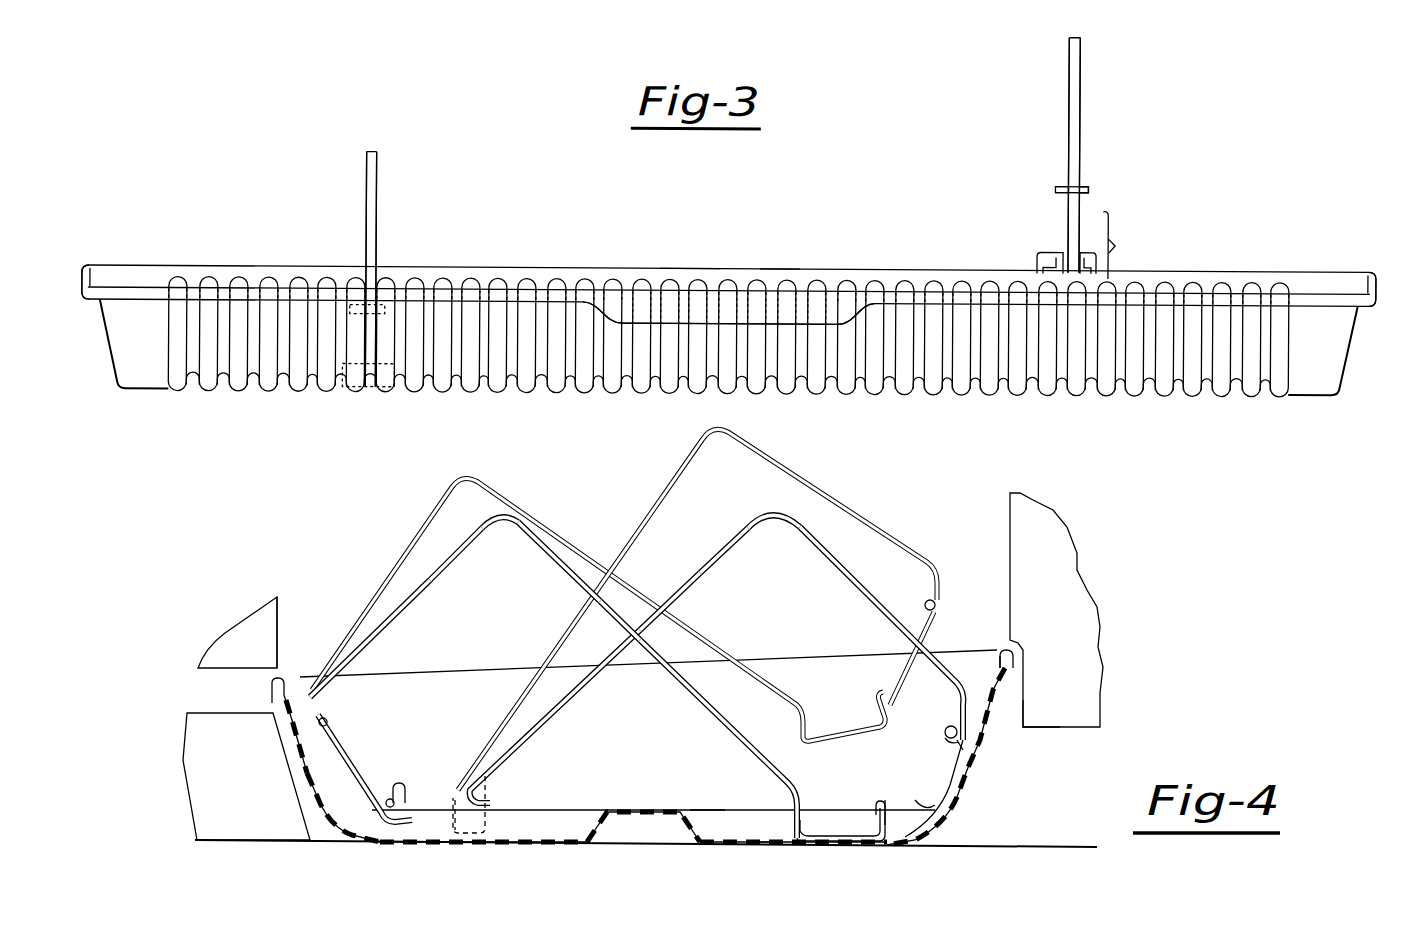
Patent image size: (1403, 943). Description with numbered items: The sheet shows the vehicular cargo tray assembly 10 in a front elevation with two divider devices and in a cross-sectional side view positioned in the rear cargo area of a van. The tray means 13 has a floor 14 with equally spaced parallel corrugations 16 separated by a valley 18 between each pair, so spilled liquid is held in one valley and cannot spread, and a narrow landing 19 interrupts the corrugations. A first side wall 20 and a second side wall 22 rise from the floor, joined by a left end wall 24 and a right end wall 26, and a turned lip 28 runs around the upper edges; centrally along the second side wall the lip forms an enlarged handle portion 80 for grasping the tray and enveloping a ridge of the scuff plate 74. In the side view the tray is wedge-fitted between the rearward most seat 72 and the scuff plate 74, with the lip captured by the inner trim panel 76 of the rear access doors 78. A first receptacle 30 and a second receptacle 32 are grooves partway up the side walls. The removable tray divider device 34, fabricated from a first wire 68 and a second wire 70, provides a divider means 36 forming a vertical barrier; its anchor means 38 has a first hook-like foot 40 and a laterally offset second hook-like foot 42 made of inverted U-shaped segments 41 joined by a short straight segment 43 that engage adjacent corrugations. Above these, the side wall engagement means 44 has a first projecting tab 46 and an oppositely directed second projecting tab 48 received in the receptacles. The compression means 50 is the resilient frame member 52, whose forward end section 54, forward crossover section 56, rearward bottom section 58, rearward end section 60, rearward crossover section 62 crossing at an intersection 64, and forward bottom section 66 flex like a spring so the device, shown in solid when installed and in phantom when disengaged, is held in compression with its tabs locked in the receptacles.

In FIG. 3, the vehicular cargo tray assembly 10 is at (773, 241).
In FIG. 4, the vehicular cargo tray assembly 10 is at (1070, 660).
In FIG. 3, the tray means 13 is at (690, 259).
In FIG. 4, the tray means 13 is at (1000, 640).
In FIG. 4, the floor 14 is at (547, 810).
In FIG. 3, the corrugations 16 is at (242, 270).
In FIG. 4, the corrugations 16 is at (707, 810).
In FIG. 3, the valley 18 is at (227, 392).
In FIG. 4, the valley 18 is at (765, 840).
In FIG. 4, the landing 19 is at (620, 810).
In FIG. 3, the first side wall 20 is at (138, 262).
In FIG. 4, the first side wall 20 is at (997, 677).
In FIG. 3, the second side wall 22 is at (130, 320).
In FIG. 4, the second side wall 22 is at (290, 693).
In FIG. 3, the left end wall 24 is at (92, 308).
In FIG. 3, the right end wall 26 is at (1347, 336).
In FIG. 3, the turned lip 28 is at (1376, 302).
In FIG. 4, the turned lip 28 is at (1013, 677).
In FIG. 4, the first receptacle 30 is at (945, 738).
In FIG. 4, the second receptacle 32 is at (337, 737).
In FIG. 3, the removable tray divider device 34 is at (405, 151).
In FIG. 4, the removable tray divider device 34 is at (562, 517).
In FIG. 3, the divider means 36 is at (377, 220).
In FIG. 4, the divider means 36 is at (770, 435).
In FIG. 3, the anchor means 38 is at (1040, 236).
In FIG. 4, the anchor means 38 is at (880, 790).
In FIG. 3, the first hook-like foot 40 is at (1112, 234).
In FIG. 4, the first hook-like foot 40 is at (815, 792).
In FIG. 4, the inverted U-shaped segments 41 is at (393, 785).
In FIG. 3, the second hook-like foot 42 is at (1037, 252).
In FIG. 4, the second hook-like foot 42 is at (410, 850).
In FIG. 4, the short straight segment 43 is at (848, 827).
In FIG. 3, the side wall engagement means 44 is at (1052, 171).
In FIG. 4, the side wall engagement means 44 is at (950, 727).
In FIG. 3, the first projecting tab 46 is at (1057, 177).
In FIG. 4, the first projecting tab 46 is at (960, 735).
In FIG. 3, the second projecting tab 48 is at (1082, 177).
In FIG. 4, the second projecting tab 48 is at (323, 722).
In FIG. 4, the compression means 50 is at (477, 520).
In FIG. 4, the resilient frame member 52 is at (457, 560).
In FIG. 4, the forward end section 54 is at (887, 608).
In FIG. 4, the forward crossover section 56 is at (707, 567).
In FIG. 4, the rearward bottom section 58 is at (348, 807).
In FIG. 4, the rearward end section 60 is at (407, 613).
In FIG. 4, the rearward crossover section 62 is at (687, 700).
In FIG. 4, the intersection 64 is at (630, 642).
In FIG. 4, the forward bottom section 66 is at (927, 790).
In FIG. 4, the first wire 68 is at (720, 567).
In FIG. 4, the second wire 70 is at (567, 577).
In FIG. 4, the rearward most seat 72 is at (1007, 513).
In FIG. 4, the scuff plate 74 is at (223, 712).
In FIG. 4, the inner trim panel 76 is at (277, 620).
In FIG. 4, the rear access doors 78 is at (222, 635).
In FIG. 3, the handle portion 80 is at (808, 318).